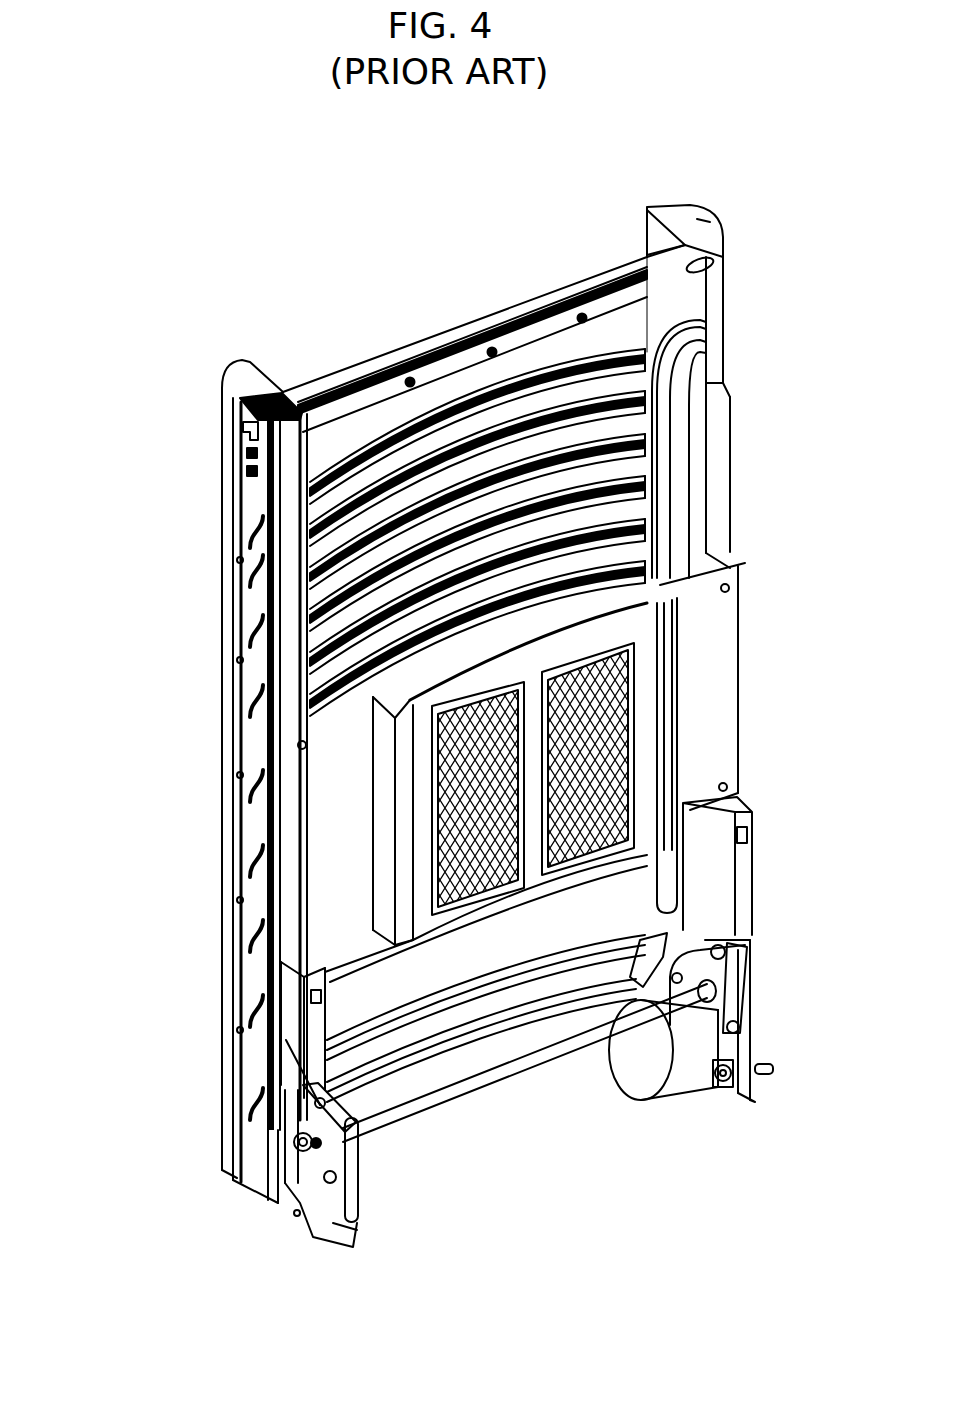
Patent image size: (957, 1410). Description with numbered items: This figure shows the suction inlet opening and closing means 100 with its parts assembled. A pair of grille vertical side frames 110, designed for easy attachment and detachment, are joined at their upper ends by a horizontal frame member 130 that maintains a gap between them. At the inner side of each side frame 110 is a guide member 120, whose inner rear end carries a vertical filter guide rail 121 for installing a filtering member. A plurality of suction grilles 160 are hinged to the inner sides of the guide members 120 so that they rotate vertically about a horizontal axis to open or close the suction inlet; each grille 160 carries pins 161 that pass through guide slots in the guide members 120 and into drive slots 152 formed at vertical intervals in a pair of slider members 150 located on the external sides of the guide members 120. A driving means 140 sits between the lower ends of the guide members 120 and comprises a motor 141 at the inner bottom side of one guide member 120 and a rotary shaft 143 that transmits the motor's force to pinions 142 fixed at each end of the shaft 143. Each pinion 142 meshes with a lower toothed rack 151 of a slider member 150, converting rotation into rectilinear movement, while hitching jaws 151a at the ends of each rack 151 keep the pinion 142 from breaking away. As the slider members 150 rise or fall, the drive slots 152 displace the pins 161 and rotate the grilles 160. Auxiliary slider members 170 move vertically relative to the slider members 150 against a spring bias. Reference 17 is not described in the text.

The suction inlet opening and closing means 100 is at (168, 244).
The grille vertical side frame 110 is at (233, 377).
The guide member 120 is at (690, 301).
The vertical filter guide rail 121 is at (680, 437).
The horizontal frame member 130 is at (548, 293).
The driving means 140 is at (640, 1080).
The motor 141 is at (692, 1082).
The pinion 142 is at (337, 1177).
The rotary shaft 143 is at (443, 1087).
The slider member 150 is at (243, 677).
The lower toothed rack 151 is at (313, 1237).
The hitching jaw 151a is at (293, 1127).
The drive slot 152 is at (253, 928).
The suction grille 160 is at (578, 492).
The pin 161 is at (238, 613).
The auxiliary slider member 170 is at (248, 430).
The grille housing 17 is at (630, 757).